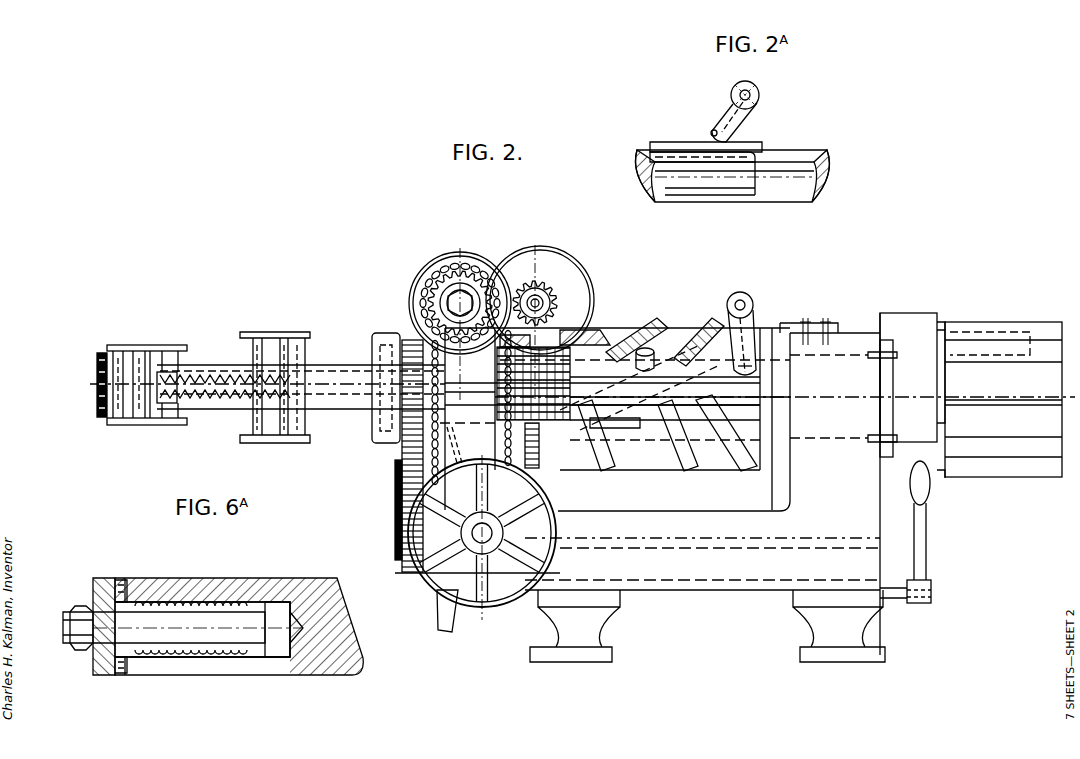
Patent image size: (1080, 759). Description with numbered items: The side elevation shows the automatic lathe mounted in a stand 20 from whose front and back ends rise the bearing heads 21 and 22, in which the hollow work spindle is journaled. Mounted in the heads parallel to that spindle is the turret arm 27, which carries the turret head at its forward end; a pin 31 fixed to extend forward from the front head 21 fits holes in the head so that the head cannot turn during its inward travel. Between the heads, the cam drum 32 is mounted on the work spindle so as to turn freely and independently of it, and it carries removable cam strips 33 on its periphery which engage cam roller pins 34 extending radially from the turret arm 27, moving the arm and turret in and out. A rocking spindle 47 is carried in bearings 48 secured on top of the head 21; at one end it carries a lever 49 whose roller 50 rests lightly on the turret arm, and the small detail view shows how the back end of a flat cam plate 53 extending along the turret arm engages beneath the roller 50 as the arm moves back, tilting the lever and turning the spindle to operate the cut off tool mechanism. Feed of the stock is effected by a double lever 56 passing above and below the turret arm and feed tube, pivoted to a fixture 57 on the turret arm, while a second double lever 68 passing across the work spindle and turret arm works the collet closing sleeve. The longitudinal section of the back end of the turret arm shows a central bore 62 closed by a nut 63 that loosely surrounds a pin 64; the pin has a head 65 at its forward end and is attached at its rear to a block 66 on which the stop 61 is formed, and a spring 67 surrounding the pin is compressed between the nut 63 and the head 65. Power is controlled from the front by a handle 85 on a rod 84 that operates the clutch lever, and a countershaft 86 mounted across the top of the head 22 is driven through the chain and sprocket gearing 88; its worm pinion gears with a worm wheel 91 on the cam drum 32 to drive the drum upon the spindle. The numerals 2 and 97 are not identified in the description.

In FIG. 2, the motor drive unit 2 is at (1052, 380).
In FIG. 2, the stand 20 is at (640, 487).
In FIG. 2, the bearing head 21 is at (862, 385).
In FIG. 2, the bearing head 22 is at (581, 419).
In FIG. 2, the turret arm 27 is at (343, 398).
In FIG. 6A, the turret arm 27 is at (239, 618).
In FIG. 2, the pin 31 is at (943, 325).
In FIG. 2, the cam drum 32 is at (620, 327).
In FIG. 2, the cam strips 33 is at (650, 322).
In FIG. 2, the cam roller pins 34 is at (648, 335).
In FIG. 2, the rocking spindle 47 is at (746, 300).
In FIG. 2A, the rocking spindle 47 is at (759, 94).
In FIG. 2, the bearings 48 is at (740, 298).
In FIG. 2, the lever 49 is at (758, 330).
In FIG. 2A, the lever 49 is at (728, 98).
In FIG. 2, the roller 50 is at (755, 360).
In FIG. 2A, the roller 50 is at (712, 129).
In FIG. 2A, the flat cam plate 53 is at (658, 142).
In FIG. 2, the double lever 56 is at (150, 343).
In FIG. 2, the fixture 57 is at (172, 412).
In FIG. 6A, the stop 61 is at (98, 577).
In FIG. 6A, the bore 62 is at (238, 601).
In FIG. 6A, the nut 63 is at (126, 578).
In FIG. 6A, the pin 64 is at (182, 632).
In FIG. 6A, the head 65 is at (285, 660).
In FIG. 6A, the block 66 is at (93, 660).
In FIG. 6A, the spring 67 is at (225, 652).
In FIG. 2, the second double lever 68 is at (268, 331).
In FIG. 2, the rod 84 is at (893, 594).
In FIG. 2, the handle 85 is at (926, 502).
In FIG. 2, the countershaft 86 is at (553, 290).
In FIG. 2, the chain and sprocket gearing 88 is at (438, 282).
In FIG. 2, the worm wheel 91 is at (537, 462).
In FIG. 2, the pulley 97 is at (539, 246).